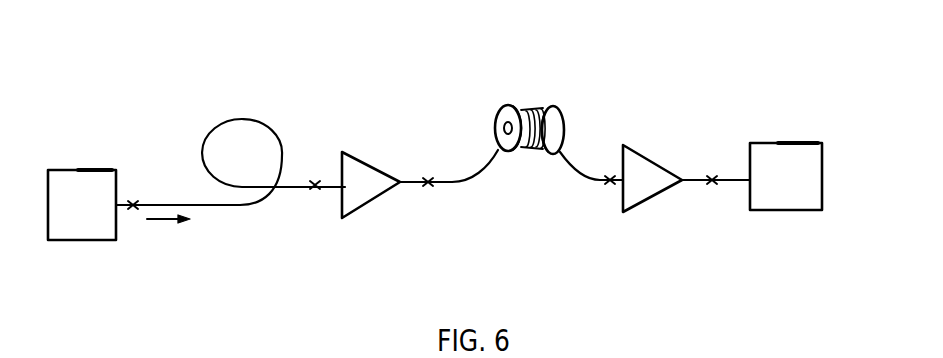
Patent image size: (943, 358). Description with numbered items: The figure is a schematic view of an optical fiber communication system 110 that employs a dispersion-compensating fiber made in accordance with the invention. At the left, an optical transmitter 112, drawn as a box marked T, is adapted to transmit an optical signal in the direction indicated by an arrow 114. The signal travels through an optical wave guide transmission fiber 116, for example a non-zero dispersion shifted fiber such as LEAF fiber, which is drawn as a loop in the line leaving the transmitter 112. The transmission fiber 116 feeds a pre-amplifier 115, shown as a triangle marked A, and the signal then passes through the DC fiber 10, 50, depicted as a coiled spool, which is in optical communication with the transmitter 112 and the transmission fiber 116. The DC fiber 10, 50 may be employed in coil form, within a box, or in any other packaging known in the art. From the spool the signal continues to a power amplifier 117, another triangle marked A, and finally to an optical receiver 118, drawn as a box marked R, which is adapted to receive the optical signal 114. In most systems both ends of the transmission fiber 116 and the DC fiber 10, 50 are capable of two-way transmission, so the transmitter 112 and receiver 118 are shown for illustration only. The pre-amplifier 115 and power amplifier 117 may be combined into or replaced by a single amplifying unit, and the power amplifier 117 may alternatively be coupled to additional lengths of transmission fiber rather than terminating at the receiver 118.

The optical fiber communication system 110 is at (398, 100).
The optical transmitter 112 is at (86, 241).
The arrow 114 is at (167, 220).
The pre-amplifier 115 is at (365, 209).
The optical wave guide transmission fiber 116 is at (242, 119).
The DC fiber 10 is at (556, 100).
The DC fiber 50 is at (530, 94).
The power amplifier 117 is at (652, 205).
The optical receiver 118 is at (784, 212).